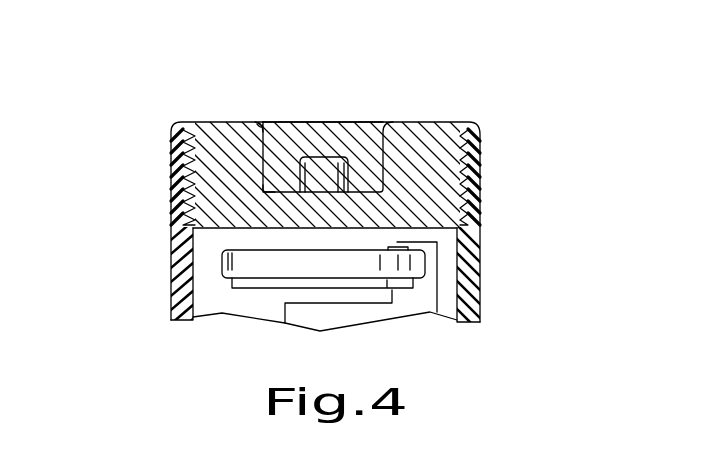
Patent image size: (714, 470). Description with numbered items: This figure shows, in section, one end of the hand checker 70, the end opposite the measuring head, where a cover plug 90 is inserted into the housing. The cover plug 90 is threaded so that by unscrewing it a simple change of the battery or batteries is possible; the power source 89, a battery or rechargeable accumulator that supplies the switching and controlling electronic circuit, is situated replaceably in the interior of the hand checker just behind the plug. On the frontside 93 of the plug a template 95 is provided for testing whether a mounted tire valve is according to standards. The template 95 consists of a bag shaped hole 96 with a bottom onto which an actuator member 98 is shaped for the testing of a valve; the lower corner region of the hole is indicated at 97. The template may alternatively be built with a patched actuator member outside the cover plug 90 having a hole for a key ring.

The hand checker 70 is at (133, 265).
The power source 89 is at (417, 265).
The cover plug 90 is at (171, 138).
The frontside 93 is at (433, 121).
The template 95 is at (348, 121).
The bag shaped hole 96 is at (266, 142).
The recess bottom 97 is at (280, 191).
The actuator member 98 is at (318, 162).